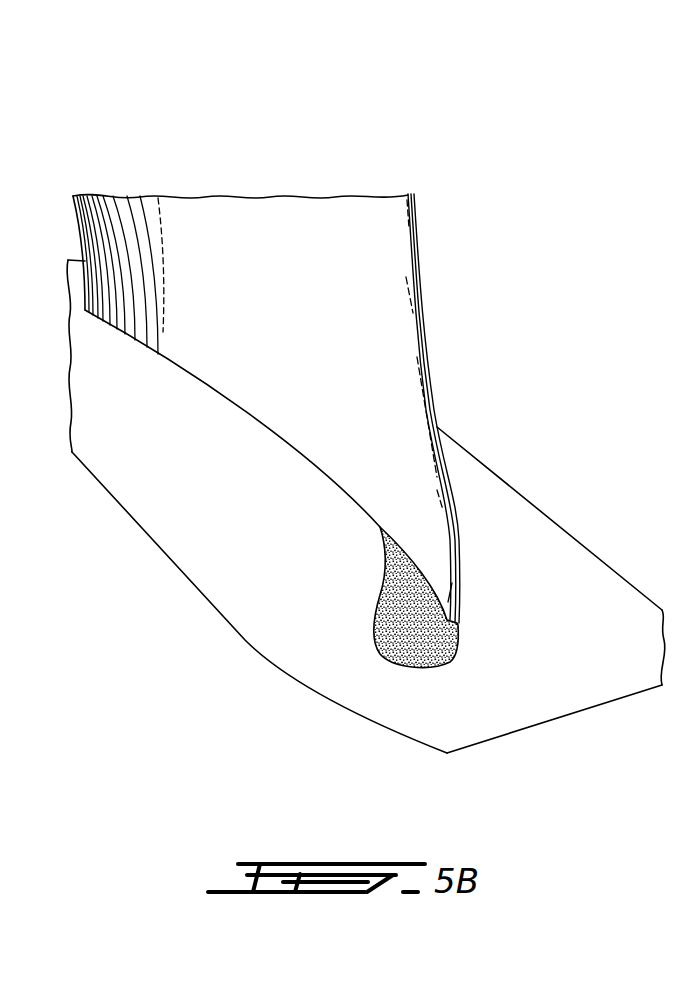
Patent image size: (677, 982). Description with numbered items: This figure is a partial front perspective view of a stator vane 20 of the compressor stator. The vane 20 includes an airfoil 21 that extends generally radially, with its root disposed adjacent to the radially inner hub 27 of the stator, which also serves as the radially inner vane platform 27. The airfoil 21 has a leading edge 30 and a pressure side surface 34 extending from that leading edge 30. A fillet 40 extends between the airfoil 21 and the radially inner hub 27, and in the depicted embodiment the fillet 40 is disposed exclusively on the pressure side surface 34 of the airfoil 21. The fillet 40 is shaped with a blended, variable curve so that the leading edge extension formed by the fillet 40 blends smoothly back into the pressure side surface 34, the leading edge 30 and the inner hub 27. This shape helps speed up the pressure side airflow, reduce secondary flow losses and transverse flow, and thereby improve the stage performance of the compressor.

The stator vane 20 is at (309, 167).
The airfoil 21 is at (392, 260).
The radially inner hub 27 is at (588, 630).
The leading edge 30 is at (421, 315).
The pressure side surface 34 is at (278, 362).
The fillet 40 is at (468, 524).